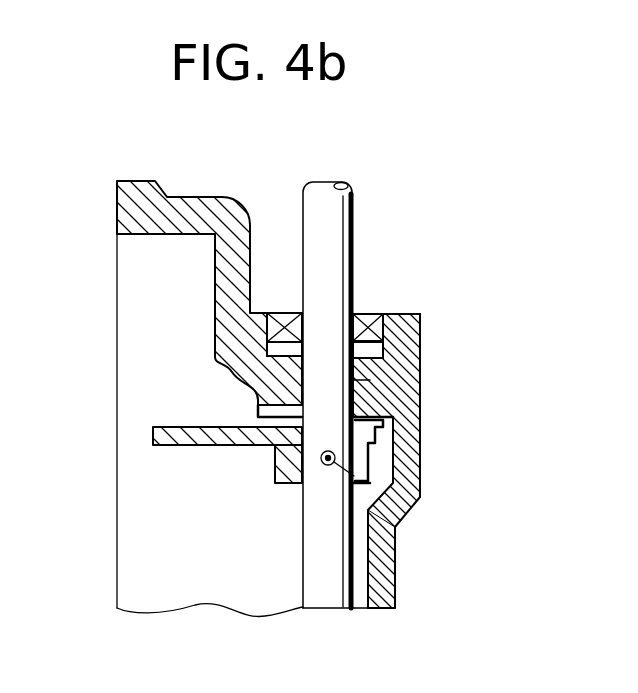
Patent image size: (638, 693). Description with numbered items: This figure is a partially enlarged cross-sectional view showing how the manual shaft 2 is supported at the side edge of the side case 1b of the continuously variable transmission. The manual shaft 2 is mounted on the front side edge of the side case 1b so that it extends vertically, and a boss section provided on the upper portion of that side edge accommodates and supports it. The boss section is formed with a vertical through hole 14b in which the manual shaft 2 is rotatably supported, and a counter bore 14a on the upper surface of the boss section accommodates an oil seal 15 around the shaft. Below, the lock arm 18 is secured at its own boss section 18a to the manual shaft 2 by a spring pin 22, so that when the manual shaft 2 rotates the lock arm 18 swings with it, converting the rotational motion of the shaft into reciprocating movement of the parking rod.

The side case 1b is at (200, 212).
The manual shaft 2 is at (328, 225).
The oil seal 15 is at (283, 320).
The counter bore 14a is at (392, 332).
The vertical through hole 14b is at (368, 380).
The boss section 18a is at (372, 462).
The spring pin 22 is at (398, 514).
The lock arm 18 is at (188, 440).